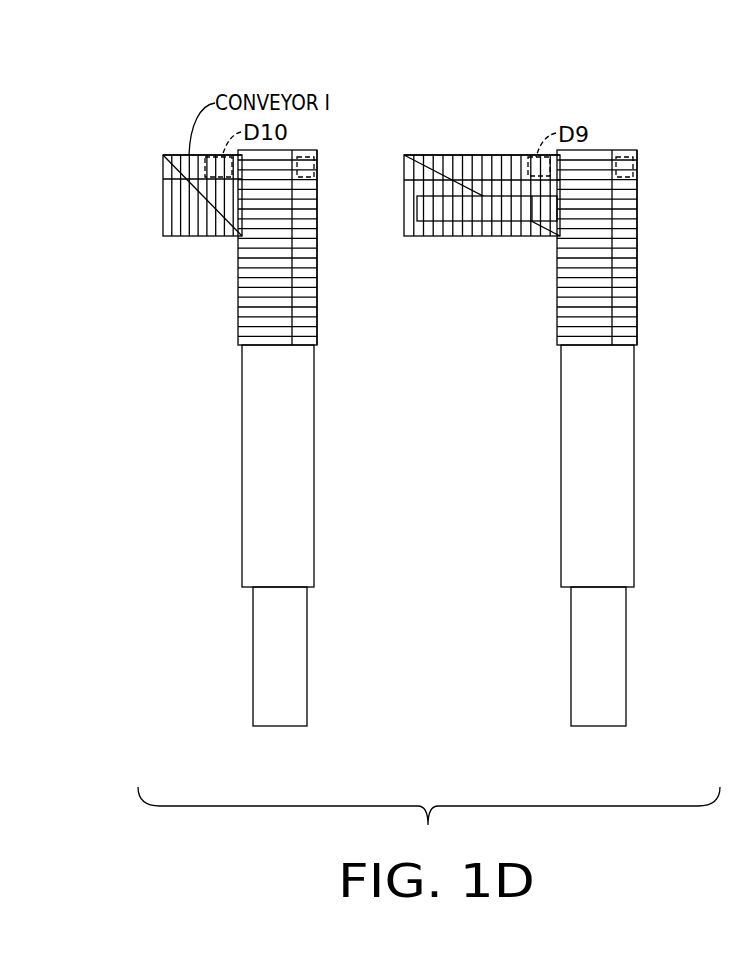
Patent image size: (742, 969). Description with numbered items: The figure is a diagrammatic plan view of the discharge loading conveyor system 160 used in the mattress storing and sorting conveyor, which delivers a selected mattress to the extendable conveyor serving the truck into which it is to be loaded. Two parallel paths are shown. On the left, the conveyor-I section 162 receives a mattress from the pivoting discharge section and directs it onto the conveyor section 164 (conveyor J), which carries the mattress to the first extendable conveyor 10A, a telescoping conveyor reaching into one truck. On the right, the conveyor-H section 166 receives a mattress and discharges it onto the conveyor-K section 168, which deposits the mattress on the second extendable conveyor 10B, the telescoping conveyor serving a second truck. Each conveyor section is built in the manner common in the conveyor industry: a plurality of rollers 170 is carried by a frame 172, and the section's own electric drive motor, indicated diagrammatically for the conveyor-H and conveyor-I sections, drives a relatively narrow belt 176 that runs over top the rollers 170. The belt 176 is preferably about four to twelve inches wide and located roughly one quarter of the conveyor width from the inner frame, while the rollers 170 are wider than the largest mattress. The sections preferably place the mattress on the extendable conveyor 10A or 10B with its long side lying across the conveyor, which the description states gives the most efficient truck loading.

The discharge loading conveyor system 160 is at (607, 41).
The conveyor-I section 162 is at (219, 249).
The conveyor section 164 is at (225, 325).
The conveyor-H section 166 is at (542, 250).
The conveyor-K section 168 is at (641, 243).
The rollers 170 is at (200, 237).
The frame 172 is at (178, 155).
The belt 176 is at (178, 182).
The first extendable conveyor 10A is at (229, 450).
The second extendable conveyor 10B is at (547, 450).